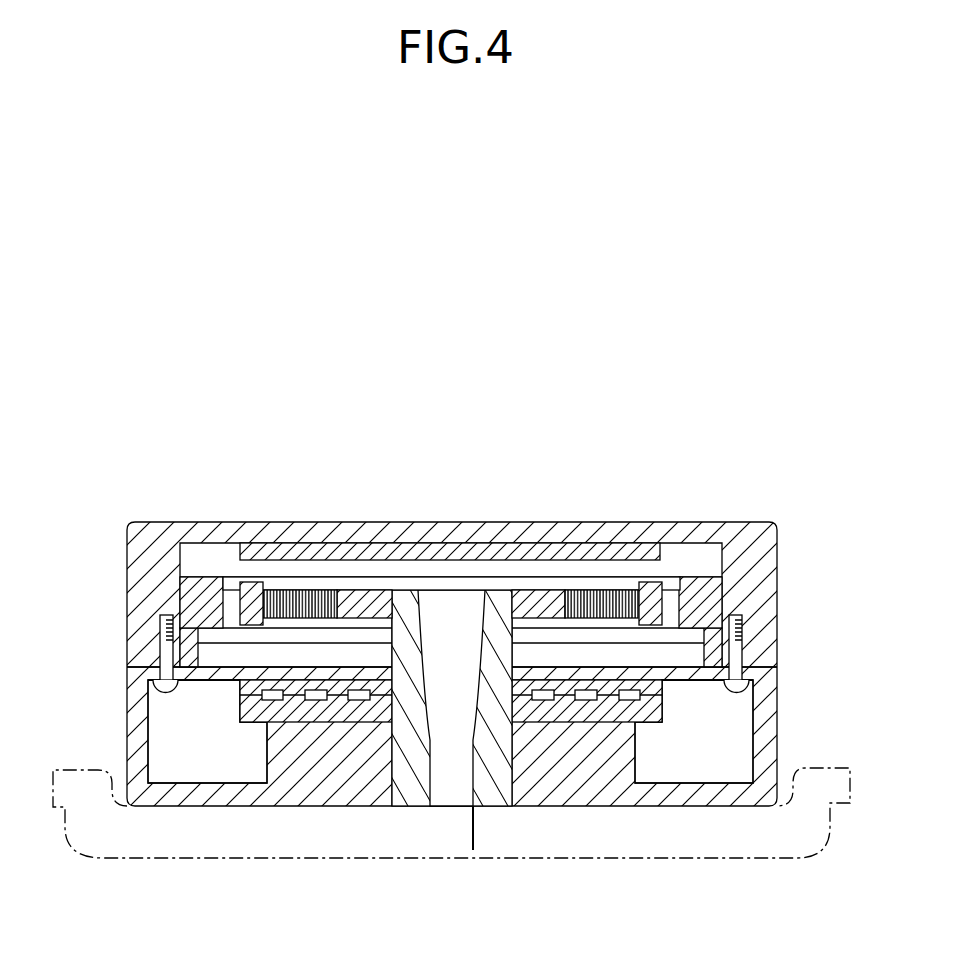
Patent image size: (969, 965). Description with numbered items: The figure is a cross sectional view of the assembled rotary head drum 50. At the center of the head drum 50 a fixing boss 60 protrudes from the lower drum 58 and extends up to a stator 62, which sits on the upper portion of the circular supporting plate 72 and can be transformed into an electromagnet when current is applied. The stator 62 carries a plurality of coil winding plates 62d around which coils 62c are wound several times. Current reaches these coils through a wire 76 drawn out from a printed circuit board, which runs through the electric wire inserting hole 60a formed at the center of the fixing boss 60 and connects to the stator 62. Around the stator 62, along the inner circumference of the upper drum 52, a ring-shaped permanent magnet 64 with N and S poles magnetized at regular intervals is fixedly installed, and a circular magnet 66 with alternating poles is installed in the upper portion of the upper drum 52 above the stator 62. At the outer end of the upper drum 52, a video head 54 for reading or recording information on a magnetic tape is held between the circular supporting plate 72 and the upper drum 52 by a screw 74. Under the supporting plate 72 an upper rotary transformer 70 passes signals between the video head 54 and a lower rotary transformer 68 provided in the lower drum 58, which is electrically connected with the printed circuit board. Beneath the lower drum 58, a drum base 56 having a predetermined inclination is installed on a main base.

The head drum 50 is at (471, 349).
The upper drum 52 is at (453, 532).
The video head 54 is at (130, 662).
The drum base 56 is at (192, 843).
The lower drum 58 is at (283, 790).
The fixing boss 60 is at (497, 795).
The electric wire inserting hole 60a is at (478, 806).
The stator 62 is at (531, 576).
The coils 62c is at (578, 602).
The coil winding plates 62d is at (652, 600).
The ring-shaped magnet 64 is at (192, 596).
The circular magnet 66 is at (307, 552).
The lower rotary transformer 68 is at (338, 715).
The upper rotary transformer 70 is at (243, 688).
The circular supporting plate 72 is at (128, 672).
The screw 74 is at (750, 686).
The wire 76 is at (430, 806).